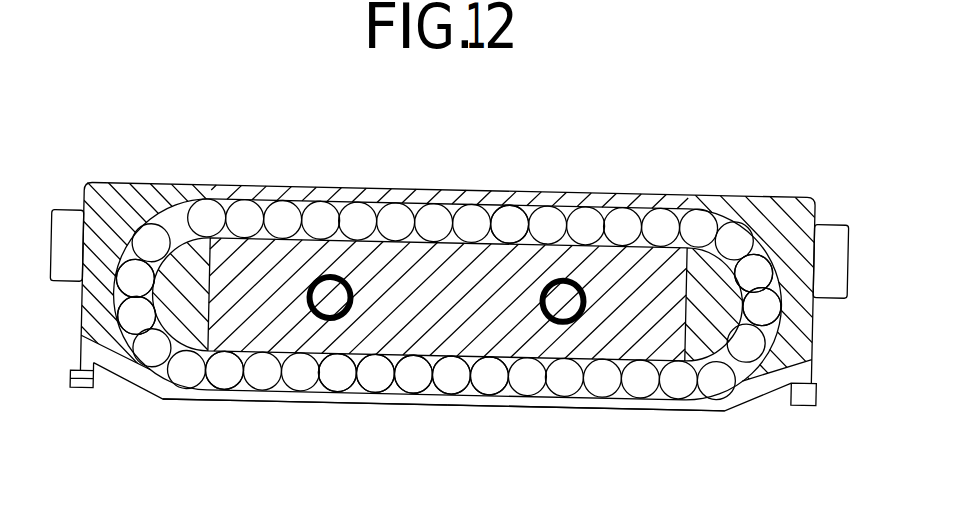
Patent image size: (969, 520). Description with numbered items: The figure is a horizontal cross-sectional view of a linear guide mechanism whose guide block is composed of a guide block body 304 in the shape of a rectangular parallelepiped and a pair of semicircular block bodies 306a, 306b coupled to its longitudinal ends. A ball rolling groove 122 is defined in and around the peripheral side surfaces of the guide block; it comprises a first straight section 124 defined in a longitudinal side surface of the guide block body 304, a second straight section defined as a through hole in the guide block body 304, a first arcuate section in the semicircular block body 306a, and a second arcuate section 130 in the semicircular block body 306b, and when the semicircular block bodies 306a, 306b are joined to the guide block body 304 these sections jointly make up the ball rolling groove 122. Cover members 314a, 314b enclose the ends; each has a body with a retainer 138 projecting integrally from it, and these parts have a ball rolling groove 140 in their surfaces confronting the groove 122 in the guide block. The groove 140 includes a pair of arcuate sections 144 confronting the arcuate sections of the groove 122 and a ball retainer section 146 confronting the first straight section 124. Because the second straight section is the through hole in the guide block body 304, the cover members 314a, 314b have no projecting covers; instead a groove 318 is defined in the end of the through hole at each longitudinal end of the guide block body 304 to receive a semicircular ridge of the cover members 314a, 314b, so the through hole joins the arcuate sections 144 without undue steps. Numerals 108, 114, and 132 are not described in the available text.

The ball 108 is at (507, 217).
The ball circulation passage 114 is at (320, 203).
The ball rolling groove 122 is at (380, 363).
The first straight section 124 is at (467, 363).
The second arcuate section 130 is at (862, 206).
The bolt hole 132 is at (331, 322).
The retainer 138 is at (273, 403).
The ball rolling groove 140 is at (170, 218).
The arcuate sections 144 is at (118, 337).
The ball retainer section 146 is at (240, 380).
The guide block body 304 is at (400, 253).
The semicircular block body 306a is at (140, 383).
The semicircular block body 306b is at (718, 352).
The cover member 314a is at (107, 198).
The cover member 314b is at (780, 203).
The groove 318 is at (702, 200).